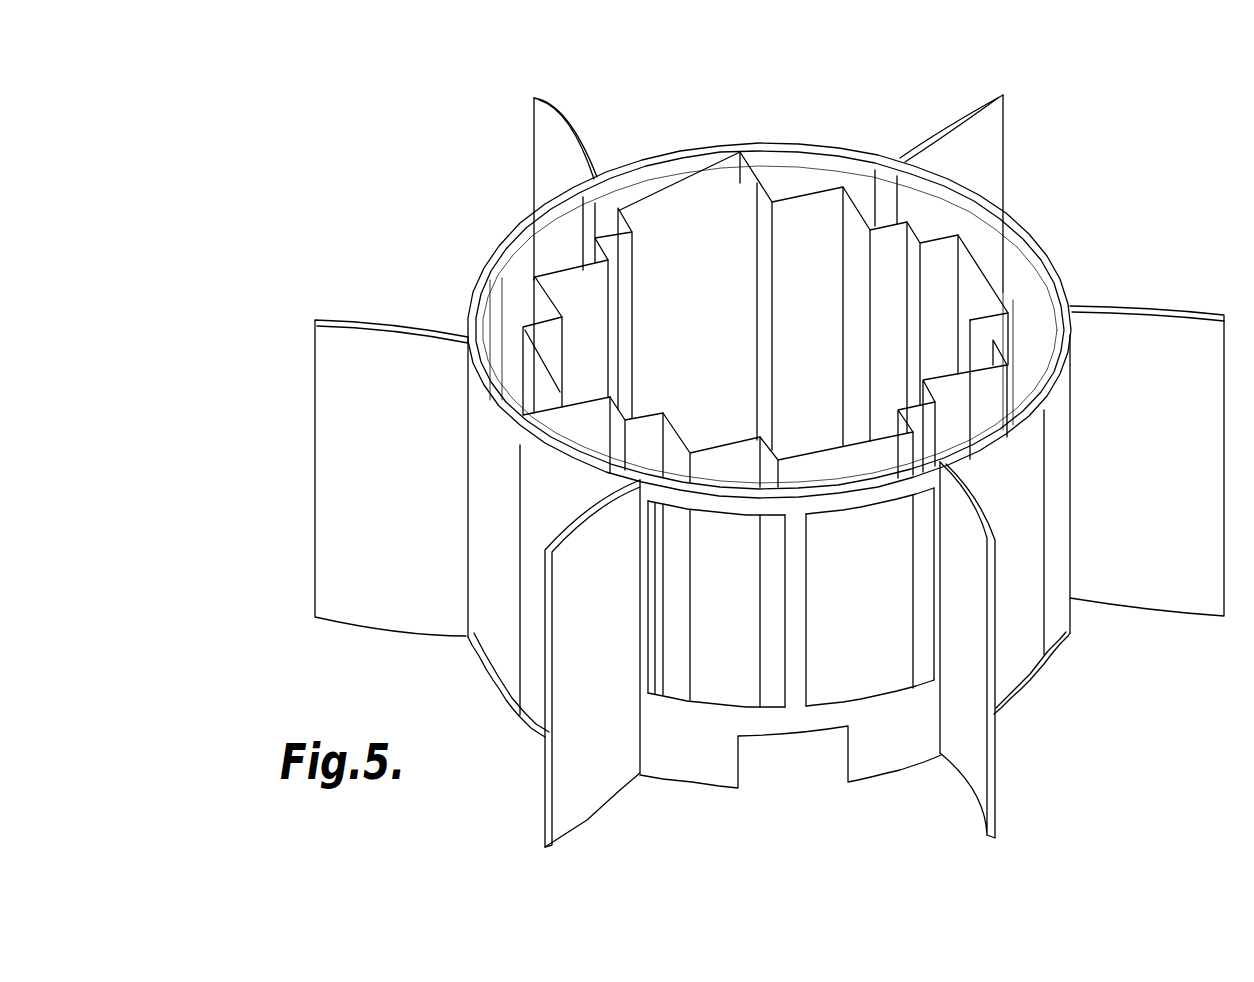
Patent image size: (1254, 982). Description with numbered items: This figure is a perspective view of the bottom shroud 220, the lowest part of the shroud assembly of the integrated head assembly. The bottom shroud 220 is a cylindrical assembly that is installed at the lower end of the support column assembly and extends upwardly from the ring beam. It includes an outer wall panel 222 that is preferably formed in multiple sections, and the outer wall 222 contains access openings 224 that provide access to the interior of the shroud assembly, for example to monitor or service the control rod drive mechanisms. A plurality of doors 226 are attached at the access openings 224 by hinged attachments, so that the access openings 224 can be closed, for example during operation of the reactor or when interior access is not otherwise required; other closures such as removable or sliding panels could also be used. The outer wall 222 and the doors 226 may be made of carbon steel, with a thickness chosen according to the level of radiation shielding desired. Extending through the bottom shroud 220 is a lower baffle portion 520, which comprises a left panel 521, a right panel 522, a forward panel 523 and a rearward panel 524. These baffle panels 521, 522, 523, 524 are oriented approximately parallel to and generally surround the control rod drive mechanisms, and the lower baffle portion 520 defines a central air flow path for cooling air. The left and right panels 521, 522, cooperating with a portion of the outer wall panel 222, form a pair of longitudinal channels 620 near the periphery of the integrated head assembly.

The bottom shroud 220 is at (403, 222).
The outer wall panel 222 is at (1057, 629).
The access openings 224 is at (713, 690).
The doors 226 is at (769, 471).
The lower baffle portion 520 is at (701, 178).
The left panel 521 is at (642, 205).
The right panel 522 is at (986, 276).
The forward panel 523 is at (651, 412).
The rearward panel 524 is at (820, 190).
The longitudinal channels 620 is at (511, 278).